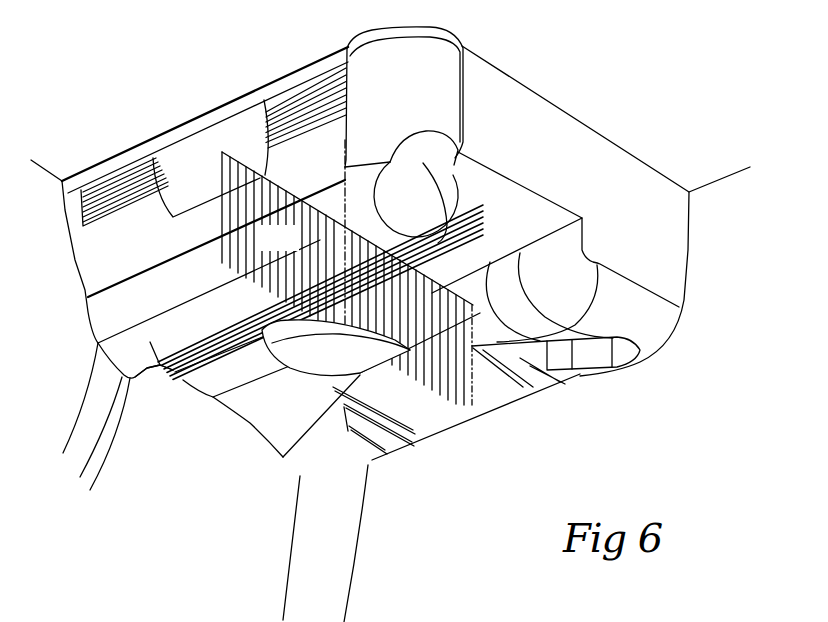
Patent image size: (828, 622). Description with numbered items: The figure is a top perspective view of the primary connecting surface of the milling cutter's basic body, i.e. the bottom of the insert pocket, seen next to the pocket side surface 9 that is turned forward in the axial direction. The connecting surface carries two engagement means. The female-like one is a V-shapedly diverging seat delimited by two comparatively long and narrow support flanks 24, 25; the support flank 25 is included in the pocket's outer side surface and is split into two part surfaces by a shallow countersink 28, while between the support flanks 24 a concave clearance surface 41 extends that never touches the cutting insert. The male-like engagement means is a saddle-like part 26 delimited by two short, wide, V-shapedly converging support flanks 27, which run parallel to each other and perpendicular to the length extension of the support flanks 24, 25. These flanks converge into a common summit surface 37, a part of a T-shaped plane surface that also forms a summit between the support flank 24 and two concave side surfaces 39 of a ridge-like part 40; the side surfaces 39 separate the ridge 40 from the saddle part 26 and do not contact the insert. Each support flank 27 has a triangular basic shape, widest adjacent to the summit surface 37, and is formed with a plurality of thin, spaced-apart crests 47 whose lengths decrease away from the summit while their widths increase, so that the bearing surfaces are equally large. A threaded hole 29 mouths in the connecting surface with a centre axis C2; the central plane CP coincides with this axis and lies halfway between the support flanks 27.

The side surface 9 is at (640, 227).
The centre axis C2 is at (347, 165).
The support flank 25 is at (120, 195).
The shallow countersink 28 is at (207, 182).
The concave clearance surface 41 is at (173, 302).
The central plane CP is at (295, 248).
The ridge-like part 40 is at (489, 245).
The summit surface 37 is at (263, 374).
The support flank 24 is at (173, 372).
The side surfaces 39 is at (280, 423).
The hole 29 is at (313, 365).
The crests 47 is at (383, 432).
The support flanks 27 is at (385, 450).
The saddle-like part 26 is at (493, 430).